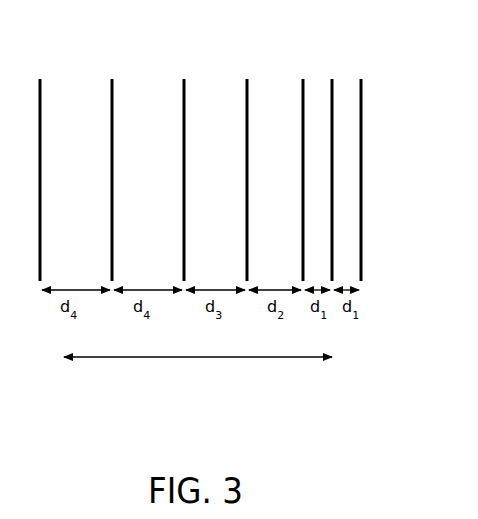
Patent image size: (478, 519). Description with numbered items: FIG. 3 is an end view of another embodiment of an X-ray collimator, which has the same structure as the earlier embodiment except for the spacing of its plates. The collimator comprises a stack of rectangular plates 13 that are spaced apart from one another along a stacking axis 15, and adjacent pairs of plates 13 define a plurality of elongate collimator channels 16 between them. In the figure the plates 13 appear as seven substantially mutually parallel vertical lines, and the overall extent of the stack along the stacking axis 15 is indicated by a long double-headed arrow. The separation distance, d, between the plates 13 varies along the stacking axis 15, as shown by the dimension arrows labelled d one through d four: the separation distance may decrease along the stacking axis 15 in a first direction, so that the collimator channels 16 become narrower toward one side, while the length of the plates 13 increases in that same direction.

The plates 13 is at (333, 197).
The stacking axis 15 is at (208, 357).
The collimator channels 16 is at (316, 106).